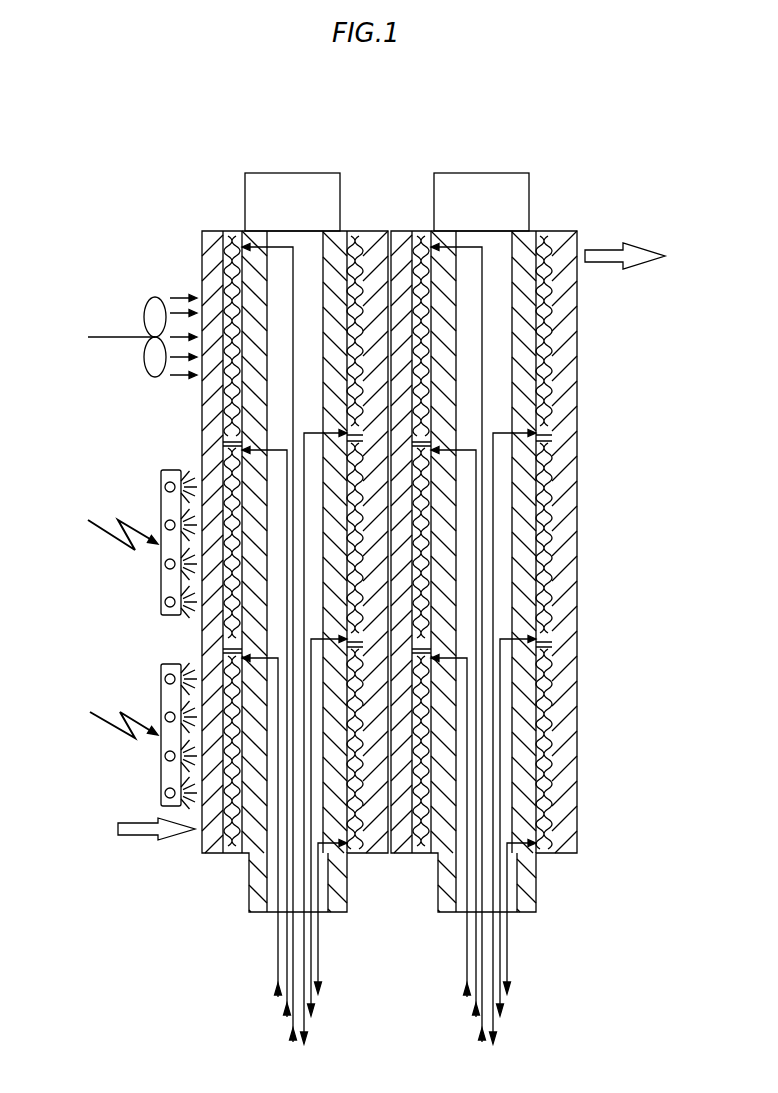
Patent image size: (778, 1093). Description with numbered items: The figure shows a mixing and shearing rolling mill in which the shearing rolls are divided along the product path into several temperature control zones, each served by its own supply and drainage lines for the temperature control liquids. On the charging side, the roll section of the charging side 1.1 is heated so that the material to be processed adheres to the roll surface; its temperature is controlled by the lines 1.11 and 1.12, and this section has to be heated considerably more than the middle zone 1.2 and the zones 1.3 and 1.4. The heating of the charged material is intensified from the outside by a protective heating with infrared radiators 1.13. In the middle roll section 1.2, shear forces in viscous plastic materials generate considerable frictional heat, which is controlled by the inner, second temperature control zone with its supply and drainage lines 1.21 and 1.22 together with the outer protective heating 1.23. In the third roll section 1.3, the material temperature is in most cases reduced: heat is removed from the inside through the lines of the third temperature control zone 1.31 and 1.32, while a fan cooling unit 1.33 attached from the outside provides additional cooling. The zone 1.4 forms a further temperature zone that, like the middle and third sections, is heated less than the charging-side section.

The roll section of the charging side 1.1 is at (202, 832).
The supply line 1.11 is at (276, 953).
The drainage line 1.12 is at (320, 953).
The infrared radiators 1.13 is at (158, 770).
The middle zone roll section 1.2 is at (197, 632).
The supply line 1.21 is at (285, 1007).
The drainage line 1.22 is at (313, 1007).
The outer protective heating 1.23 is at (158, 580).
The third roll section 1.3 is at (195, 397).
The supply line 1.31 is at (290, 1033).
The drainage line 1.32 is at (310, 1033).
The fan cooling unit 1.33 is at (142, 355).
The zone 1.4 is at (200, 263).